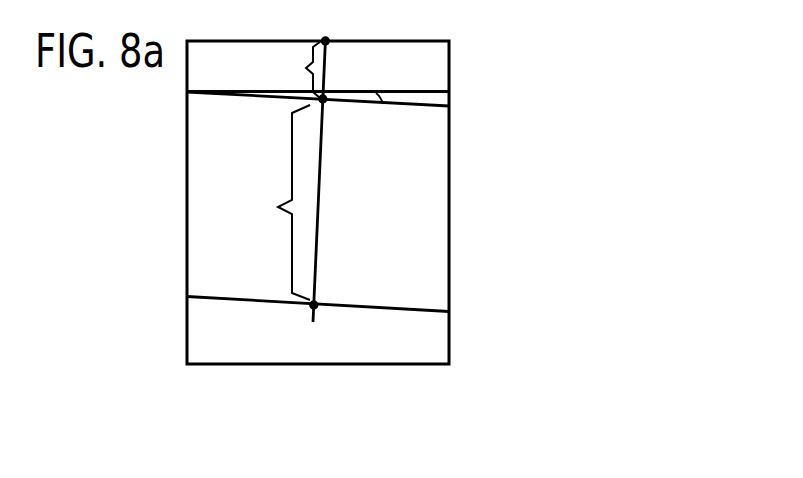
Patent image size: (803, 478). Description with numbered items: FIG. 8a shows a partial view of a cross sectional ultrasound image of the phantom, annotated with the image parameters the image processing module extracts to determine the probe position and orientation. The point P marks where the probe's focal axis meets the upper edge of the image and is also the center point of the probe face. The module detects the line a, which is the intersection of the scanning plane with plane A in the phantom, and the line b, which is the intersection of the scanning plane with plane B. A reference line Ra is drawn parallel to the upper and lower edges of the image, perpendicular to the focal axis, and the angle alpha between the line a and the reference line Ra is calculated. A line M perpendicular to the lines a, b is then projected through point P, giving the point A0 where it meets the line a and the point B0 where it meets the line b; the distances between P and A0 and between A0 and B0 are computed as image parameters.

The point P is at (323, 38).
The point A0 is at (327, 97).
The point B0 is at (317, 303).
The line M is at (318, 317).
The reference line Ra is at (432, 91).
The line a is at (444, 107).
The line b is at (433, 310).